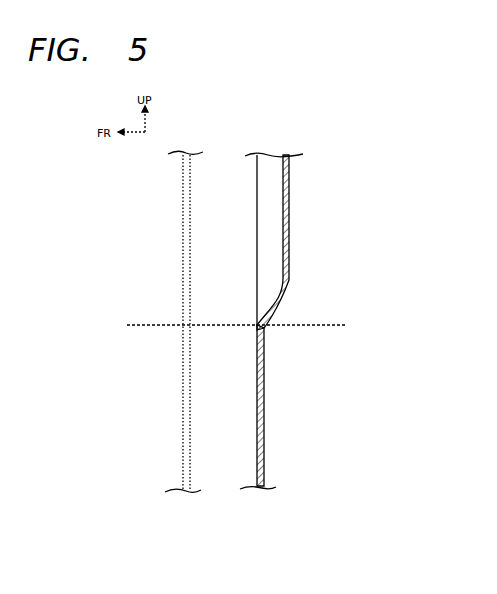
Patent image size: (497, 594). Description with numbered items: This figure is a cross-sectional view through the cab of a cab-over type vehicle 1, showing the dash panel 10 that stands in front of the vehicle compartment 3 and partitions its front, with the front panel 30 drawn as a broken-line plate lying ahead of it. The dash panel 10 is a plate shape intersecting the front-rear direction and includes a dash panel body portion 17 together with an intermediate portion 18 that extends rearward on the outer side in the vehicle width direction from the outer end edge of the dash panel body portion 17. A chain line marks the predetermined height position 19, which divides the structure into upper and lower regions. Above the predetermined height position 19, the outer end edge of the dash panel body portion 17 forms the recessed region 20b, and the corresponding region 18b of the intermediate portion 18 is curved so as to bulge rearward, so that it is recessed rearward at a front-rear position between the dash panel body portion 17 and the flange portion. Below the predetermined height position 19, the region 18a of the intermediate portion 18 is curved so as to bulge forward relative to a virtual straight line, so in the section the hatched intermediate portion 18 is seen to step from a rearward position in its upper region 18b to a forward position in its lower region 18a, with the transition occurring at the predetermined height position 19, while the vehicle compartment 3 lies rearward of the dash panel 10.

The vehicle 1 is at (75, 225).
The vehicle compartment 3 is at (460, 250).
The dash panel 10 is at (295, 344).
The dash panel body portion 17 is at (257, 222).
The intermediate portion 18 is at (305, 345).
The region of the intermediate portion extending downward 18a is at (257, 426).
The region of the intermediate portion extending upward 18b is at (289, 212).
The predetermined height position 19 is at (328, 325).
The recessed region 20b is at (257, 188).
The front panel 30 is at (183, 224).